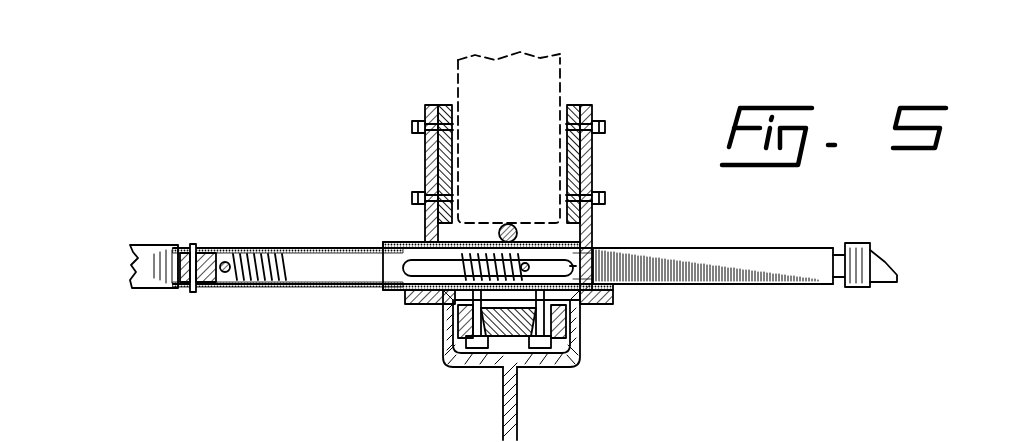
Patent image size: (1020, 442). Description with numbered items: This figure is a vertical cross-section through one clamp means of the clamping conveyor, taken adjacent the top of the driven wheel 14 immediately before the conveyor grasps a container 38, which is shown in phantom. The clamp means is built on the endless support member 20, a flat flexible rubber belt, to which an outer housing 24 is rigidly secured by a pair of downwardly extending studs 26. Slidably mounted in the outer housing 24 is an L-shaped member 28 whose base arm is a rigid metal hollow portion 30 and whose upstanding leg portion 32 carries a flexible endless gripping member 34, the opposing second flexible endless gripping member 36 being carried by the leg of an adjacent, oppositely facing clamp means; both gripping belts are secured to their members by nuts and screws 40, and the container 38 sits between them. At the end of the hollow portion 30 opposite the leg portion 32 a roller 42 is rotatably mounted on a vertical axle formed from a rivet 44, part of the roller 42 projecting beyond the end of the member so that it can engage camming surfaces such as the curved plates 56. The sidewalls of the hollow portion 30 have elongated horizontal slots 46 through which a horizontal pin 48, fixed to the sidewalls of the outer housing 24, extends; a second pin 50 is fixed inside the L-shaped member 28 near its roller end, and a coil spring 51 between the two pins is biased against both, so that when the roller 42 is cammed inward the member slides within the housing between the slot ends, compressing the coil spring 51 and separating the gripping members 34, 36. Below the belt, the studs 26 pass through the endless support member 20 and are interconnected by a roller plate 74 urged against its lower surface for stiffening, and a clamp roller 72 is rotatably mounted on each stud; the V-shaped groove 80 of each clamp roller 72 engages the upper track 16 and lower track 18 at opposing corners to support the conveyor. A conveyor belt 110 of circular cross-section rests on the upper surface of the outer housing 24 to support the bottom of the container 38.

The driven wheel 14 is at (517, 400).
The upper track 16 is at (508, 330).
The lower track 18 is at (550, 345).
The endless support member 20 is at (440, 300).
The outer housing 24 is at (470, 240).
The studs 26 is at (465, 318).
The L-shaped member 28 is at (283, 248).
The hollow portion 30 is at (300, 284).
The leg portion 32 is at (425, 160).
The flexible endless gripping member 34 is at (574, 105).
The second flexible endless gripping member 36 is at (447, 105).
The container 38 is at (520, 163).
The nuts and screws 40 is at (412, 127).
The roller 42 is at (190, 284).
The rivet 44 is at (193, 244).
The elongated horizontal slots 46 is at (560, 268).
The horizontal pin 48 is at (545, 262).
The second pin 50 is at (225, 273).
The coil spring 51 is at (270, 282).
The curved plates 56 is at (165, 289).
The clamp roller 72 is at (545, 338).
The roller plate 74 is at (552, 310).
The V-shaped groove 80 is at (440, 318).
The conveyor belt 110 is at (510, 224).